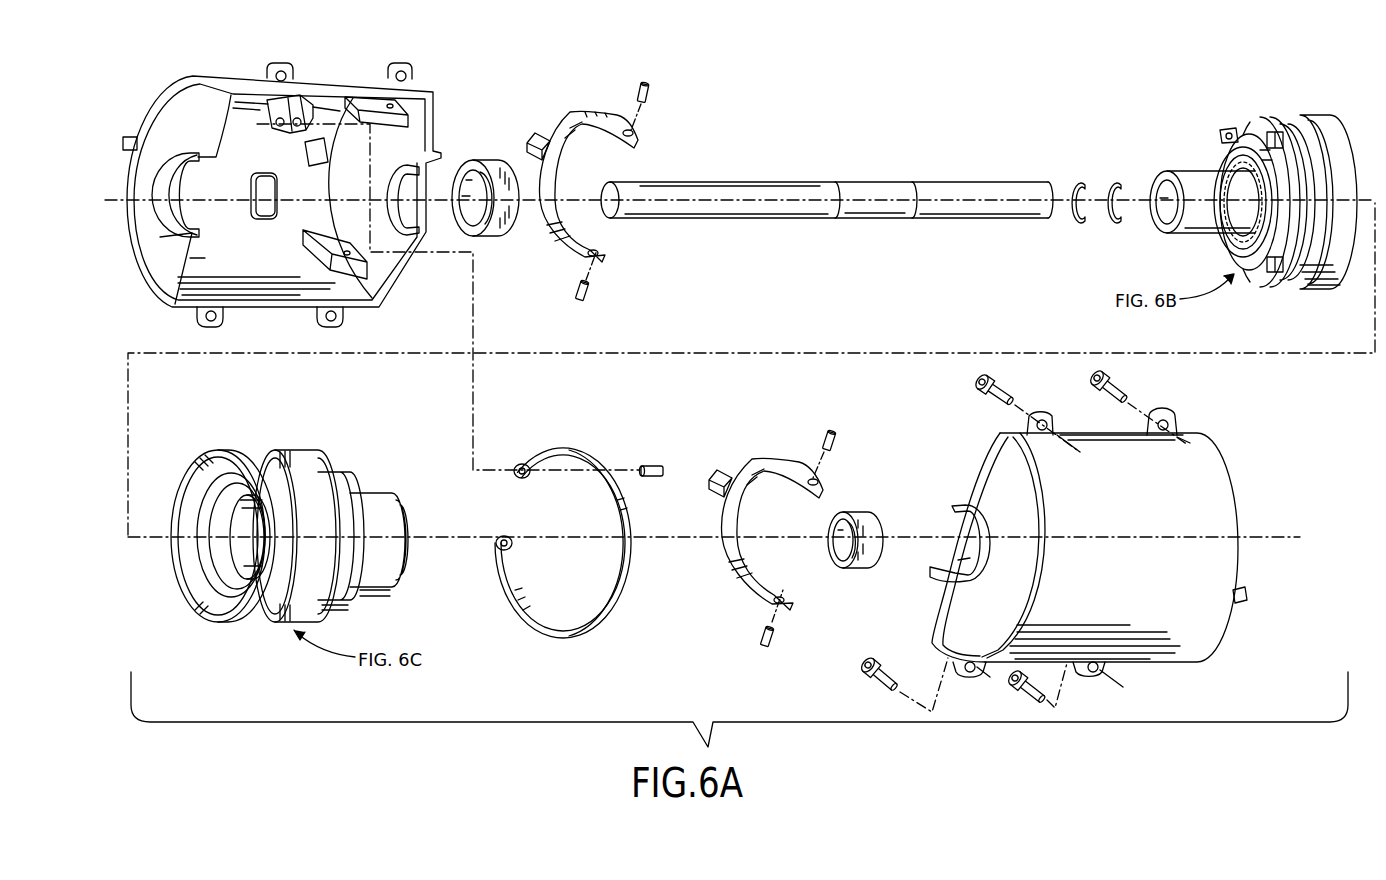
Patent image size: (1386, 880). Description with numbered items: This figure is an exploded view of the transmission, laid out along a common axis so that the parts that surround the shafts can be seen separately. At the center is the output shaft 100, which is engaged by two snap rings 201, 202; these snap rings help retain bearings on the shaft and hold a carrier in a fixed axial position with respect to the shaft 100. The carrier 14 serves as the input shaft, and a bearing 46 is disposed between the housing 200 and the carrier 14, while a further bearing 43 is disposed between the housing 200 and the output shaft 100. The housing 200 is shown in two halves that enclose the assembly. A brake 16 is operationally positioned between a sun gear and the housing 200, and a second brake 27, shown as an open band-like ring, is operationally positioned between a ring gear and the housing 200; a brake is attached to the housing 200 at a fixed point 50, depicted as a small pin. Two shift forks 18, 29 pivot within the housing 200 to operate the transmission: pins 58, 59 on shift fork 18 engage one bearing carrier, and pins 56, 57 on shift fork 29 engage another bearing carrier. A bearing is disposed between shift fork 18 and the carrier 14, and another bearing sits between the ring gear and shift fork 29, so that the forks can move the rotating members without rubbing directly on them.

The housing 200 is at (228, 77).
The bearing 46 is at (490, 162).
The shift fork 18 is at (572, 112).
The pin 59 is at (655, 90).
The pin 58 is at (594, 290).
The output shaft 100 is at (866, 182).
The snap ring 202 is at (1072, 185).
The snap ring 201 is at (1115, 182).
The carrier 14 is at (1190, 168).
The brake 16 is at (1300, 126).
The fixed point 50 is at (676, 462).
The pin 56 is at (822, 438).
The bearing 43 is at (868, 510).
The brake 27 is at (518, 600).
The shift fork 29 is at (738, 578).
The pin 57 is at (760, 642).